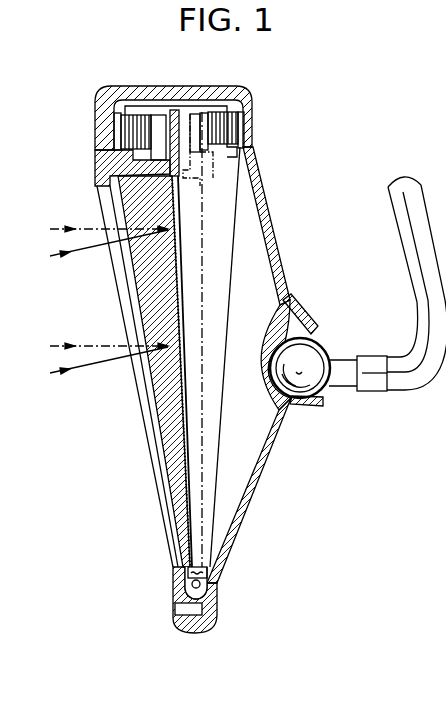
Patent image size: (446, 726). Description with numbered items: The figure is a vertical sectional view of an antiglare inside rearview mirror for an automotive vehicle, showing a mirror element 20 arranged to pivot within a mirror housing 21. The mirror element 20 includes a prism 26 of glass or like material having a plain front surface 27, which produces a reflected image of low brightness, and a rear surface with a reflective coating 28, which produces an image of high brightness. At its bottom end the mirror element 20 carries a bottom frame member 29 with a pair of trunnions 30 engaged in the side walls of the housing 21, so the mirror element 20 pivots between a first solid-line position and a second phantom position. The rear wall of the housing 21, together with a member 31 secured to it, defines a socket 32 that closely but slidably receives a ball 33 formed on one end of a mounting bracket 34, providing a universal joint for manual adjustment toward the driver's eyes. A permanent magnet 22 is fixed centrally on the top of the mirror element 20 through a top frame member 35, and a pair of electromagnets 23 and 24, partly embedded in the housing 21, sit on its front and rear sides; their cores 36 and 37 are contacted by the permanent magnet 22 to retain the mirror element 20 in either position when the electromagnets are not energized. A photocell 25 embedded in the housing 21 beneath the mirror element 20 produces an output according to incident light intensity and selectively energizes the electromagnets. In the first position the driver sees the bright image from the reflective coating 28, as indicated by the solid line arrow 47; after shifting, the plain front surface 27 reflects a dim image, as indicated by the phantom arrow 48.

The mirror element 20 is at (167, 462).
The mirror housing 21 is at (100, 120).
The permanent magnet 22 is at (171, 112).
The front electromagnet 23 is at (130, 117).
The rear electromagnet 24 is at (228, 112).
The photocell 25 is at (172, 612).
The prism 26 is at (163, 427).
The plain front surface 27 is at (150, 392).
The reflective coating 28 is at (205, 288).
The bottom frame member 29 is at (223, 592).
The trunnion 30 is at (184, 585).
The member 31 is at (268, 388).
The socket 32 is at (303, 333).
The ball 33 is at (322, 390).
The mounting bracket 34 is at (407, 228).
The top frame member 35 is at (102, 176).
The core of front electromagnet 36 is at (153, 114).
The core of rear electromagnet 37 is at (193, 116).
The solid line arrow 47 is at (88, 248).
The phantom arrow 48 is at (107, 364).